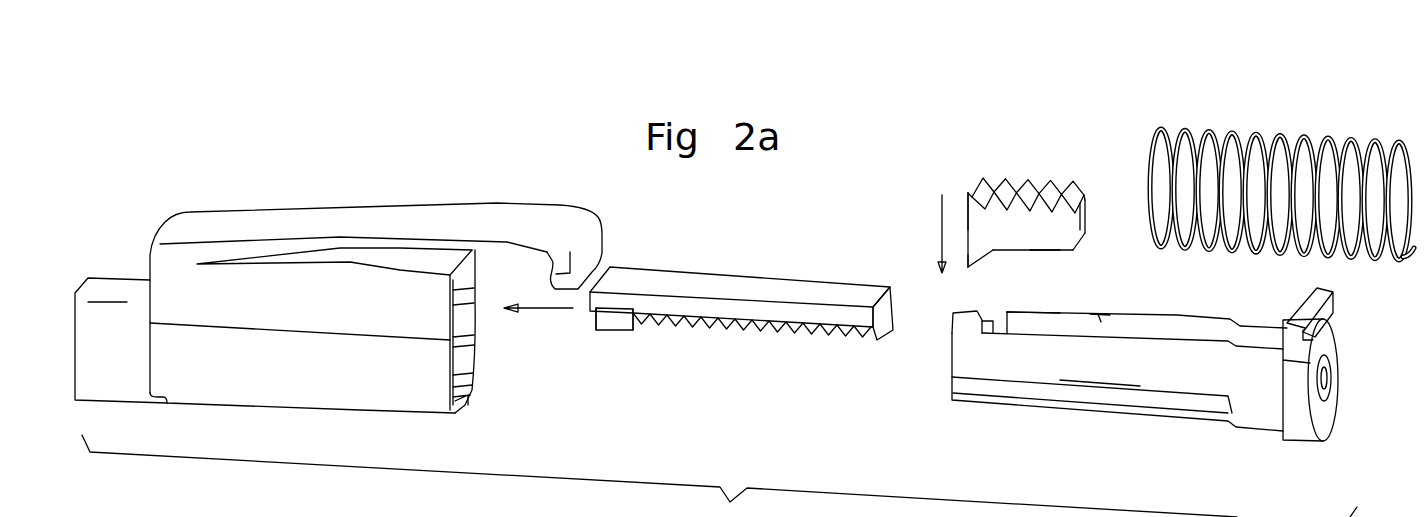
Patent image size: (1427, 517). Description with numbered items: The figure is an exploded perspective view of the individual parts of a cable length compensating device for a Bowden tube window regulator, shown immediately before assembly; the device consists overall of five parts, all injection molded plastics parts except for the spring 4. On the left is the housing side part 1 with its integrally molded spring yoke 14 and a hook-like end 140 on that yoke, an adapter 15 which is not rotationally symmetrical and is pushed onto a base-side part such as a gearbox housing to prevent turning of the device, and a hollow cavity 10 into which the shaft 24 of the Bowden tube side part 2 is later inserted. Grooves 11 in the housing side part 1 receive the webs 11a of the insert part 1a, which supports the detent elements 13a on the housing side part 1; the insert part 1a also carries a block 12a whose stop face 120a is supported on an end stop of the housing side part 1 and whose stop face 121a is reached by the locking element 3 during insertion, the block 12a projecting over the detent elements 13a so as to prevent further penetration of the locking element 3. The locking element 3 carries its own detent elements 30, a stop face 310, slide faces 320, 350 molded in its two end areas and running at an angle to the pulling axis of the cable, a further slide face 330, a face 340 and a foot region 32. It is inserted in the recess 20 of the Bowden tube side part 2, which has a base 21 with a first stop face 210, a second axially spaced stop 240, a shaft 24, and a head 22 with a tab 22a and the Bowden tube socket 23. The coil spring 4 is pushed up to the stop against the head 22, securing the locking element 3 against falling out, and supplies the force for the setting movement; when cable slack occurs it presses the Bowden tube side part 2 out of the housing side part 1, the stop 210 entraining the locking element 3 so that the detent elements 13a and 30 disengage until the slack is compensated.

The housing side part 1 is at (268, 302).
The insert part 1a is at (747, 272).
The hollow cavity 10 is at (473, 334).
The grooves 11 is at (450, 293).
The webs 11a is at (873, 317).
The block 12a is at (612, 324).
The stop face 120a is at (594, 318).
The stop face 121a is at (637, 323).
The detent elements 13a is at (780, 327).
The spring yoke 14 is at (517, 214).
The strap hook notch 140 is at (567, 272).
The adapter 15 is at (110, 308).
The Bowden tube side part 2 is at (1133, 421).
The recess 20 is at (1033, 318).
The base 21 is at (966, 320).
The stop face 210 is at (978, 328).
The head 22 is at (1325, 428).
The cap tab 22a is at (1335, 293).
The Bowden tube socket 23 is at (1328, 382).
The shaft 24 is at (1097, 358).
The stop 240 is at (1098, 320).
The locking element 3 is at (1034, 175).
The detent elements 30 is at (995, 181).
The stop face 310 is at (967, 217).
The latch foot 32 is at (977, 250).
The slide face 320 is at (984, 259).
The slide face 330 is at (1045, 254).
The latch right face 340 is at (1087, 213).
The slide face 350 is at (1074, 247).
The spring 4 is at (1291, 132).